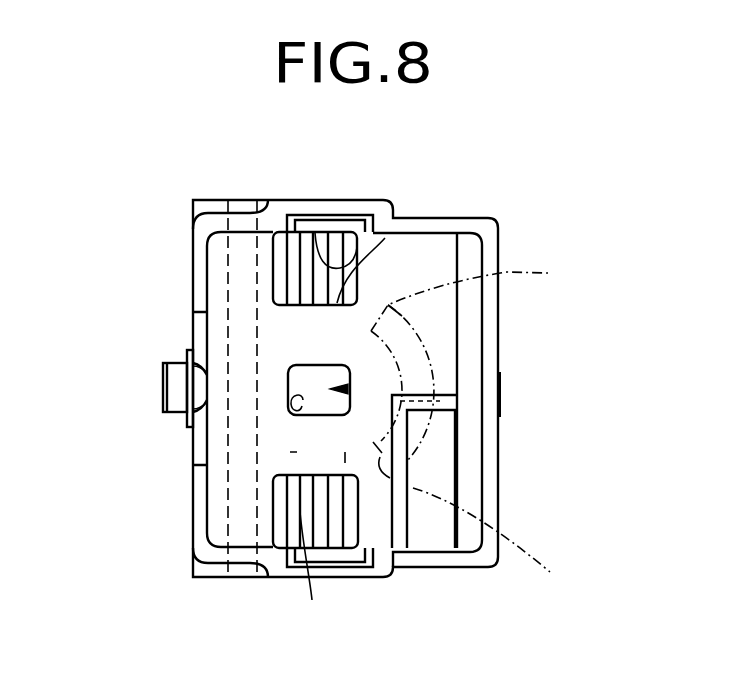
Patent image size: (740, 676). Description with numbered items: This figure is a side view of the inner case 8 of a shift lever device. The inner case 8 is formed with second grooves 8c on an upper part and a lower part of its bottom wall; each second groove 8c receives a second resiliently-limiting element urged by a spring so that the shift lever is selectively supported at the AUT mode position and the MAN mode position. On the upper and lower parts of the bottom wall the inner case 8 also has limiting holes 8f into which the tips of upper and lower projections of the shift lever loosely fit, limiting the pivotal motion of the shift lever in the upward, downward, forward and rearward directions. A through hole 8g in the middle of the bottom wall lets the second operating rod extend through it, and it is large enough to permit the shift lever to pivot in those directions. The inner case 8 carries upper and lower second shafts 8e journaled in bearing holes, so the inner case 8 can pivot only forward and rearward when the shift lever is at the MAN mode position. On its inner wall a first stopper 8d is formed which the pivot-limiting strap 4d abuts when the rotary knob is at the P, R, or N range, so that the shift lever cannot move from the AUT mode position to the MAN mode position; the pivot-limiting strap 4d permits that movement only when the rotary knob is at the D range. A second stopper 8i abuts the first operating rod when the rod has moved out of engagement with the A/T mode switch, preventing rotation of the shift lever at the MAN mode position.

The inner case 8 is at (503, 235).
The second grooves 8c is at (298, 270).
The first stopper 8d is at (408, 482).
The second shafts 8e is at (163, 395).
The limiting holes 8f is at (385, 238).
The through hole 8g is at (290, 408).
The second stopper 8i is at (192, 395).
The pivot-limiting strap 4d is at (484, 425).
The D range D is at (333, 389).
The N range N is at (333, 389).
The R range R is at (333, 389).
The P range P is at (333, 389).